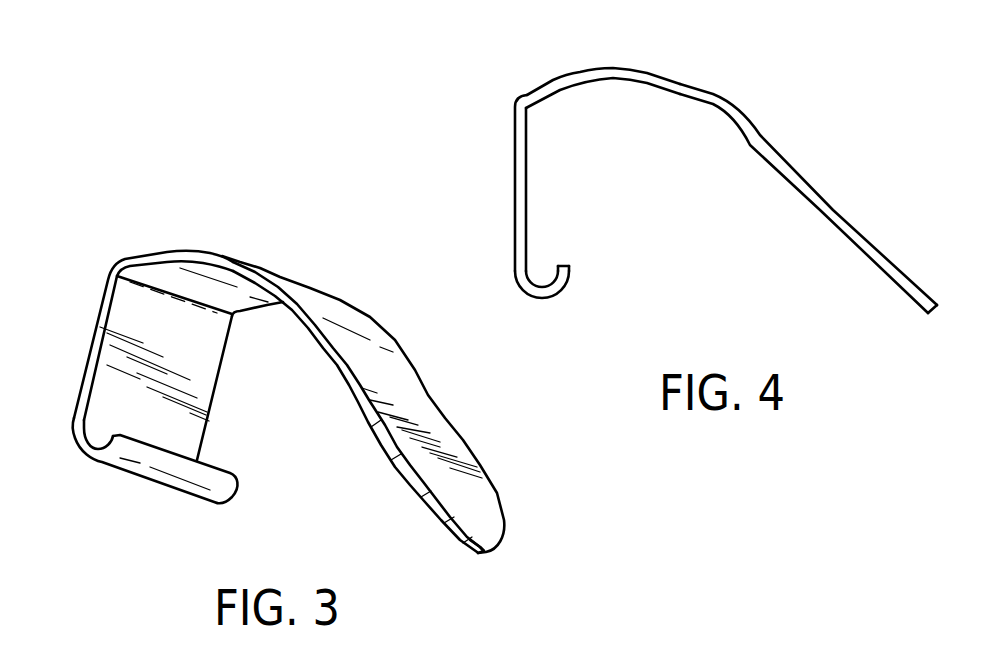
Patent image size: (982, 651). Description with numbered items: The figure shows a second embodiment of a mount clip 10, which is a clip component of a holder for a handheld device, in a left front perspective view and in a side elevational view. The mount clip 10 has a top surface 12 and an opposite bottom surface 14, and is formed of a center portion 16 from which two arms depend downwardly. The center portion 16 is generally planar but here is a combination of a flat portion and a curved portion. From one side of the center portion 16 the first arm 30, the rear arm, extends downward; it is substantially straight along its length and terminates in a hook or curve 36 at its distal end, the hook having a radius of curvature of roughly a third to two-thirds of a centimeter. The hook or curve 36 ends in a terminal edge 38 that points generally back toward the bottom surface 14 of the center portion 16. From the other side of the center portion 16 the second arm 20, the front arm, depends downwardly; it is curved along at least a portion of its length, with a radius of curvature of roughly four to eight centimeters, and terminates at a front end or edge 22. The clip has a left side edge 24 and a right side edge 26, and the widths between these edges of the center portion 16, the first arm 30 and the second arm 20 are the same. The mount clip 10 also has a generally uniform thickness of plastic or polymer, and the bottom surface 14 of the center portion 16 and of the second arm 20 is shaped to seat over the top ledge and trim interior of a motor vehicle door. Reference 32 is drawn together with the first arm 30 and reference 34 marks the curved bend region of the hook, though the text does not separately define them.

In FIG. 3, the mount clip 10 is at (120, 212).
In FIG. 4, the mount clip 10 is at (822, 79).
In FIG. 3, the top surface 12 is at (292, 278).
In FIG. 3, the bottom surface 14 is at (255, 305).
In FIG. 4, the center portion 16 is at (543, 88).
In FIG. 4, the second arm 20 is at (715, 97).
In FIG. 3, the front end or edge 22 is at (482, 554).
In FIG. 4, the front end or edge 22 is at (937, 315).
In FIG. 3, the left side edge 24 is at (388, 448).
In FIG. 3, the right side edge 26 is at (470, 450).
In FIG. 3, the first arm 30 is at (90, 350).
In FIG. 4, the first arm 30 is at (462, 183).
In FIG. 4, the plate portion 32 is at (513, 145).
In FIG. 4, the hook bend 34 is at (540, 298).
In FIG. 3, the hook or curve 36 is at (115, 470).
In FIG. 4, the hook or curve 36 is at (568, 287).
In FIG. 4, the terminal edge 38 is at (560, 264).